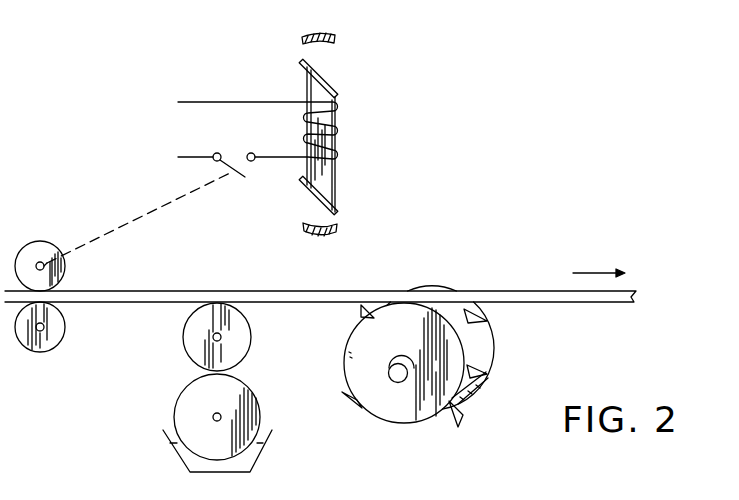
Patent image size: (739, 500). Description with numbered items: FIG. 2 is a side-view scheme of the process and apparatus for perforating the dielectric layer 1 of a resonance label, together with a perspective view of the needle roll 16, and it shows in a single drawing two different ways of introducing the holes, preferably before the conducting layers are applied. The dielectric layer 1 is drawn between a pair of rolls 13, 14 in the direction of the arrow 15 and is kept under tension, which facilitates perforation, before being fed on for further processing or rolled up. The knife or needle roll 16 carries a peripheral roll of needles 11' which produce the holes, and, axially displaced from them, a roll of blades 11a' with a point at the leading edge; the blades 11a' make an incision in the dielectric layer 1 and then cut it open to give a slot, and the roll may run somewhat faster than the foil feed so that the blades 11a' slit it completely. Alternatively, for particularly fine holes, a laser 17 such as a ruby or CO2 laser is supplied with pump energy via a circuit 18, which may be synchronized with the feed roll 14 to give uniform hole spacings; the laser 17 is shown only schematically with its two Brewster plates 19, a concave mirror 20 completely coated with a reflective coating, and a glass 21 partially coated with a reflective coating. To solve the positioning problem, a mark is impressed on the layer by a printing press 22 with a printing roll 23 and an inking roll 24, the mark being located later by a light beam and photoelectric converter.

The dielectric layer 1 is at (507, 292).
The needles 11' is at (419, 358).
The blades 11a' is at (498, 383).
The roll 13 is at (55, 352).
The feed roll 14 is at (43, 240).
The arrow 15 is at (585, 273).
The needle roll 16 is at (382, 408).
The laser 17 is at (328, 138).
The circuit 18 is at (246, 99).
The Brewster plates 19 is at (330, 90).
The concave mirror 20 is at (337, 38).
The glass 21 is at (337, 230).
The printing press 22 is at (185, 372).
The printing roll 23 is at (250, 342).
The inking roll 24 is at (262, 413).